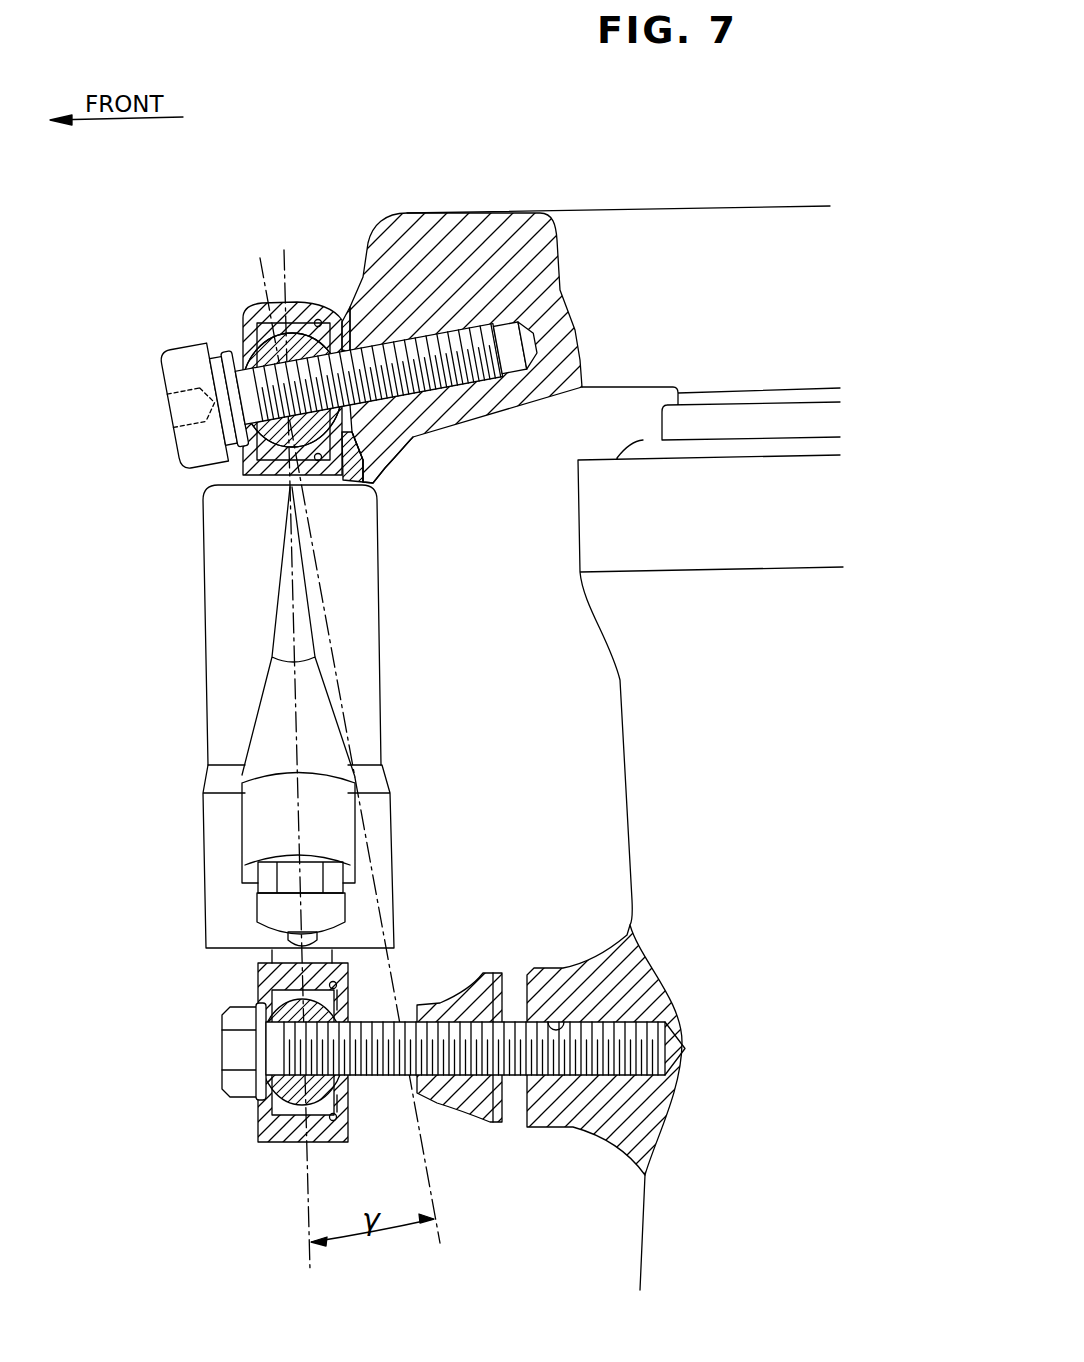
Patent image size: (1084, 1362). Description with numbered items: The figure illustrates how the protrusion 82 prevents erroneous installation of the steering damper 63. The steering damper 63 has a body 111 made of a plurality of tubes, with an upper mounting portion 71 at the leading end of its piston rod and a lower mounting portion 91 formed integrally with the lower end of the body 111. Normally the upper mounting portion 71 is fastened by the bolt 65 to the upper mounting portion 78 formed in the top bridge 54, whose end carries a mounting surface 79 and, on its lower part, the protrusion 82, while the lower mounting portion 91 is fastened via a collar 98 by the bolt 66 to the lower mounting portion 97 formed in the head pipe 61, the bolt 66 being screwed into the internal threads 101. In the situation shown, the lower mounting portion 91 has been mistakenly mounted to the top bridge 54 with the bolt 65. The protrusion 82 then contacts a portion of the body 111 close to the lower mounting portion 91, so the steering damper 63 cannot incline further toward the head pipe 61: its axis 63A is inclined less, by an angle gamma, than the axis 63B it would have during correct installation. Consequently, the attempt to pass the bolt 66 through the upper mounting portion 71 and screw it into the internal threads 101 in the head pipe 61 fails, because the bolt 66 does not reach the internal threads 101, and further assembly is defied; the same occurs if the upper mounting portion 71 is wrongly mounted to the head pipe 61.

The top bridge 54 is at (613, 227).
The upper mounting portion 78 is at (450, 407).
The protrusion 82 is at (400, 460).
The mounting surface 79 is at (337, 317).
The lower mounting portion 91 is at (243, 319).
The bolt 65 is at (172, 378).
The head pipe 61 is at (637, 732).
The body 111 is at (362, 578).
The steering damper 63 is at (202, 669).
The axis 63A is at (298, 820).
The axis 63B is at (375, 903).
The upper mounting portion 71 is at (267, 1145).
The collar 98 is at (477, 1122).
The lower mounting portion 97 is at (577, 1117).
The bolt 66 is at (222, 1057).
The internal threads 101 is at (553, 1022).